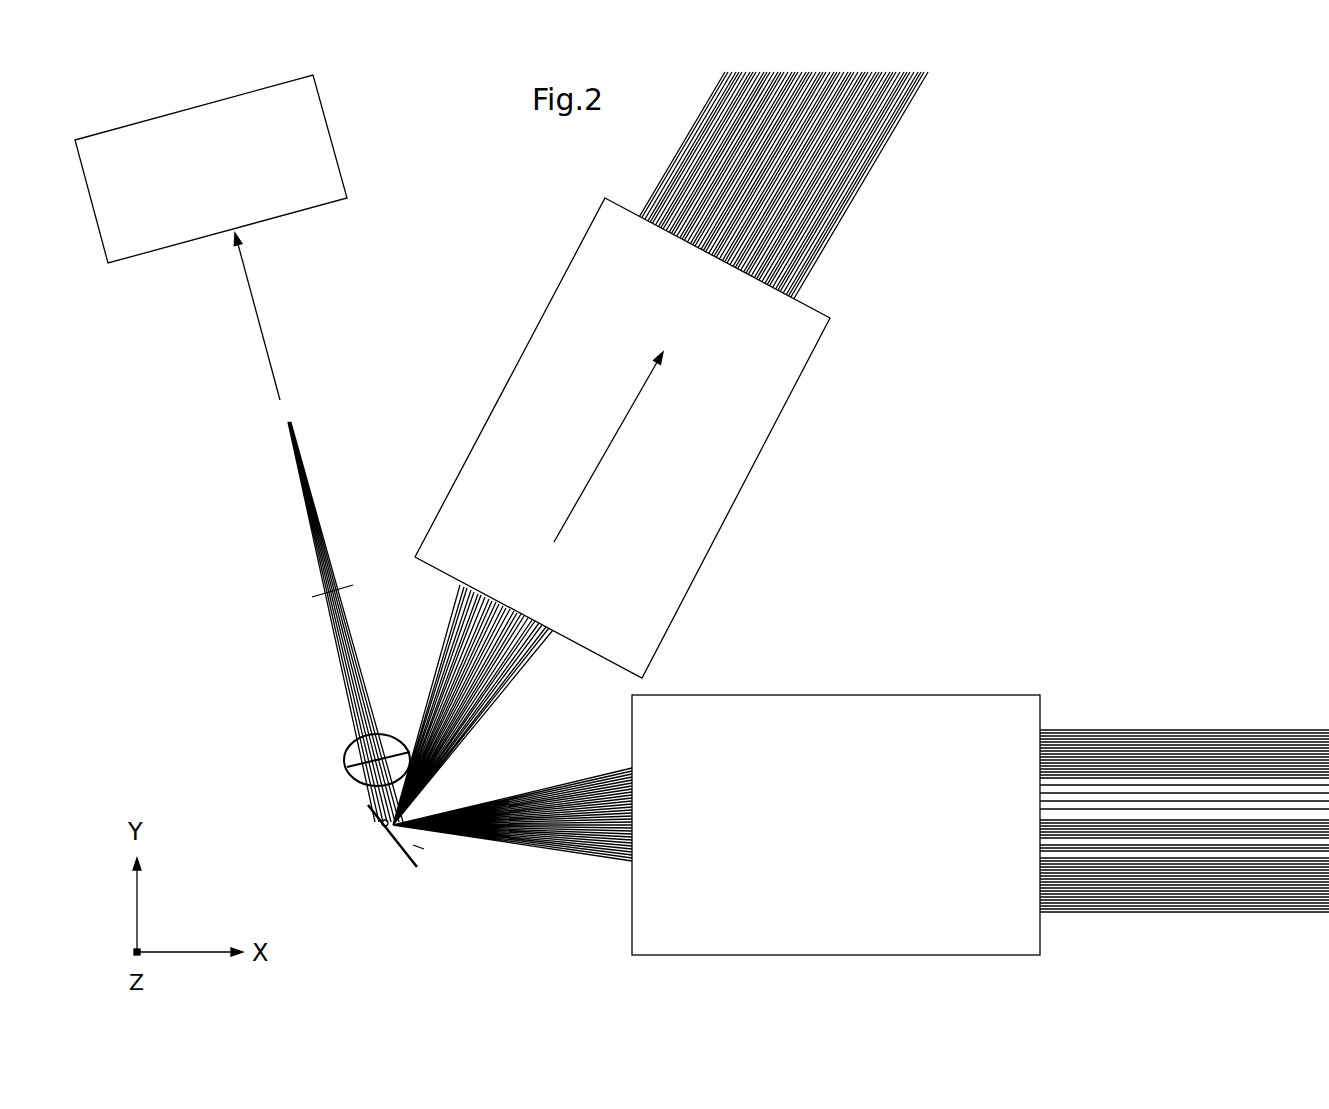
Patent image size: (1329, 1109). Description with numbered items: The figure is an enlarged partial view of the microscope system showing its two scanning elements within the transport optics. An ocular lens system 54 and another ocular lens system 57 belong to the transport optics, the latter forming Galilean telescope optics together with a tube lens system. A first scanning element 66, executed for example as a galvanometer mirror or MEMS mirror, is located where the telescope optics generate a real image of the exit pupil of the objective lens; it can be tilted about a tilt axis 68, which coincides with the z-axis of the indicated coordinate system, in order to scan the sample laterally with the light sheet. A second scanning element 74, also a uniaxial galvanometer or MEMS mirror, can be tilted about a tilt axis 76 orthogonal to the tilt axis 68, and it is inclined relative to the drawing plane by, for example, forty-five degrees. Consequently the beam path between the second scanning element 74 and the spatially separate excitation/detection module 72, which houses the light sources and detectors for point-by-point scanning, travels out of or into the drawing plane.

The ocular lens system 54 is at (953, 692).
The ocular lens system 57 is at (698, 573).
The first scanning element 66 is at (410, 868).
The tilt axis 68 is at (387, 833).
The excitation/detection module 72 is at (337, 155).
The second scanning element 74 is at (357, 742).
The tilt axis 76 is at (363, 787).